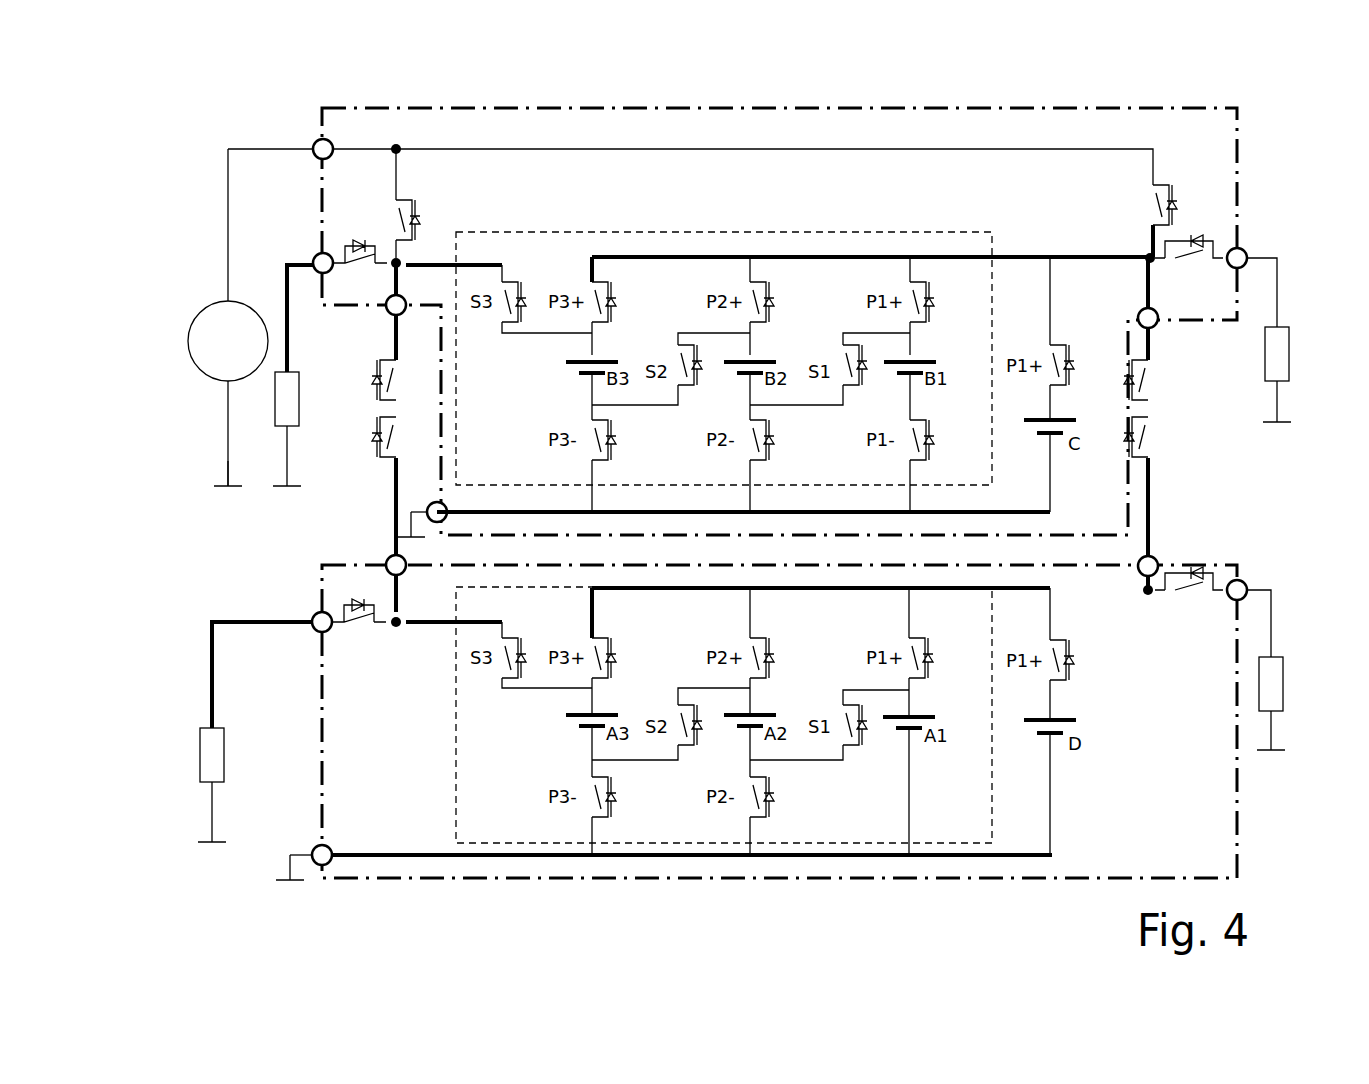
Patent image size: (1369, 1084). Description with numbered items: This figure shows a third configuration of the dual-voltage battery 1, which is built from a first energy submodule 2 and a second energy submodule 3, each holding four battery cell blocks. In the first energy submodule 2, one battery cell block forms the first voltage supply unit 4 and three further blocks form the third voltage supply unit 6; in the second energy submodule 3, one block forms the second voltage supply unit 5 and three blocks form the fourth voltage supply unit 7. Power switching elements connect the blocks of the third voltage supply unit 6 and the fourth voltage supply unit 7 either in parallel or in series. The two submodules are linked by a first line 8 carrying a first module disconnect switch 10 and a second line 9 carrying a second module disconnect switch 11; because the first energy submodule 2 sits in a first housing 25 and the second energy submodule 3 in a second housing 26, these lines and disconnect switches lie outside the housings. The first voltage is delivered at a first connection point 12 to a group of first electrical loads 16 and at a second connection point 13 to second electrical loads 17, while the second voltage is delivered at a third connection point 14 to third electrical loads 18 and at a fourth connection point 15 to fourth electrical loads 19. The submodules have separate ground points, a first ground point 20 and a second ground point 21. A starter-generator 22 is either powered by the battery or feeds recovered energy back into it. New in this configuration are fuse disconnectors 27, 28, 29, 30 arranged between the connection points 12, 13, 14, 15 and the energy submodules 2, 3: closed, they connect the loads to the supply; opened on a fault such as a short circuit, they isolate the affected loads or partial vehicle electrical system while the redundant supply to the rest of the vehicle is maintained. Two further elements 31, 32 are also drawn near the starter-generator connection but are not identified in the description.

The dual-voltage battery 1 is at (84, 254).
The first energy submodule 2 is at (1064, 169).
The second energy submodule 3 is at (404, 786).
The first voltage supply unit 4 is at (1073, 469).
The second voltage supply unit 5 is at (1073, 771).
The third voltage supply unit 6 is at (658, 231).
The fourth voltage supply unit 7 is at (454, 820).
The first line 8 is at (1150, 478).
The second line 9 is at (392, 490).
The first module disconnect switch 10 is at (1110, 399).
The second module disconnect switch 11 is at (408, 384).
The first connection point 12 is at (1238, 251).
The second connection point 13 is at (1238, 583).
The third connection point 14 is at (316, 256).
The fourth connection point 15 is at (317, 612).
The first electrical loads 16 is at (1280, 363).
The second electrical loads 17 is at (1272, 683).
The third electrical loads 18 is at (288, 400).
The fourth electrical loads 19 is at (212, 753).
The first ground point 20 is at (396, 510).
The second ground point 21 is at (323, 866).
The starter-generator 22 is at (228, 393).
The first housing 25 is at (908, 104).
The second housing 26 is at (841, 881).
The fuse disconnector 27 is at (1195, 221).
The fuse disconnector 28 is at (1187, 606).
The fuse disconnector 29 is at (360, 227).
The fuse disconnector 30 is at (358, 641).
The first charging semiconductor switch 31 is at (1173, 181).
The second charging semiconductor switch 32 is at (421, 186).